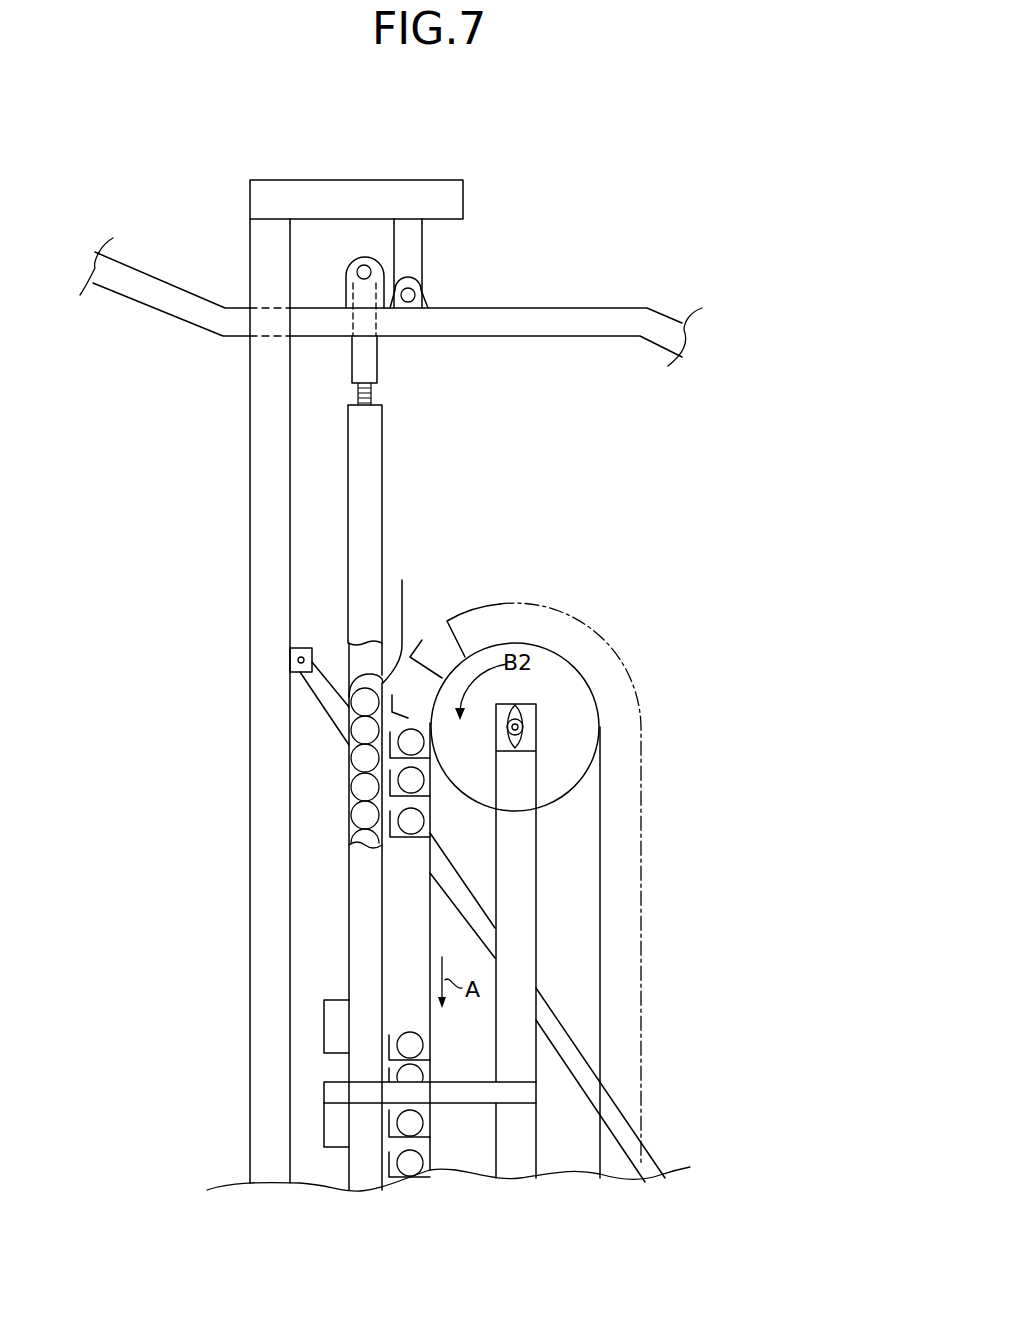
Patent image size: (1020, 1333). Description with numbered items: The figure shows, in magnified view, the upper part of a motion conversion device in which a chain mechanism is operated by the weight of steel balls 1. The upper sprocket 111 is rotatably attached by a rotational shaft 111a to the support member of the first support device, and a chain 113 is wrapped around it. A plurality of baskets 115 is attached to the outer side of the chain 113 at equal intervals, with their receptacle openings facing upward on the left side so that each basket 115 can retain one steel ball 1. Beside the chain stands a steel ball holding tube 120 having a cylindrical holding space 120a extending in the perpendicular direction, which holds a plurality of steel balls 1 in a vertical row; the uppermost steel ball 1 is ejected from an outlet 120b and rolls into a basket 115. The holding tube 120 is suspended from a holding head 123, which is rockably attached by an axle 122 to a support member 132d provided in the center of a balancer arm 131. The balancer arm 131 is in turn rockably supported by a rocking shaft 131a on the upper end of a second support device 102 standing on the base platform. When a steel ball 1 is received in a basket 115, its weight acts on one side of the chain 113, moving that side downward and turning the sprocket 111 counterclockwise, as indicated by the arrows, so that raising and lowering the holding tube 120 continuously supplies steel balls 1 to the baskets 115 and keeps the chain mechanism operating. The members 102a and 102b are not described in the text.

The steel ball 1 is at (362, 703).
The second support device 102 is at (250, 500).
The support column 102a is at (527, 952).
The cross member 102b is at (457, 1093).
The sprocket 111 is at (570, 690).
The rotational shaft 111a is at (535, 727).
The chain 113 is at (604, 838).
The basket 115 is at (420, 682).
The steel ball holding tube 120 is at (386, 466).
The holding space 120a is at (352, 780).
The outlet 120b is at (402, 580).
The axle 122 is at (357, 266).
The holding head 123 is at (370, 366).
The balancer arm 131 is at (592, 320).
The rocking shaft 131a is at (418, 297).
The support member 132d is at (370, 297).